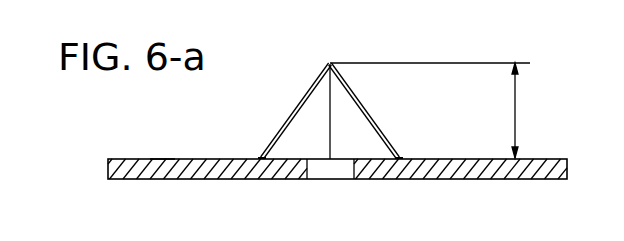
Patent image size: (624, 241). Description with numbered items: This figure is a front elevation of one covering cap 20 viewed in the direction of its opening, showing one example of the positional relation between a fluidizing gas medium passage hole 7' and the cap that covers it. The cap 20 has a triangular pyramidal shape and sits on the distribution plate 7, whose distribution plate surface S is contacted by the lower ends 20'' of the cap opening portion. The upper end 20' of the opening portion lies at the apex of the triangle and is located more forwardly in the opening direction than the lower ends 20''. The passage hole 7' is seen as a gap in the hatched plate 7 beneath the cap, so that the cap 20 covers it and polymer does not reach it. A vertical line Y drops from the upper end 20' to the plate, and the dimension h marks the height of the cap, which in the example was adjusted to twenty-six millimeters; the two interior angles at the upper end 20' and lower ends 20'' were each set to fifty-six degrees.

The distribution plate 7 is at (310, 171).
The fluidizing gas medium passage hole 7' is at (347, 191).
The distribution plate surface S is at (160, 158).
The covering cap 20 is at (284, 111).
The upper end of the cap opening portion 20' is at (403, 91).
The lower ends of the cap opening portion 20'' is at (335, 133).
The axis of symmetry Y is at (336, 157).
The height of spacer h is at (514, 110).